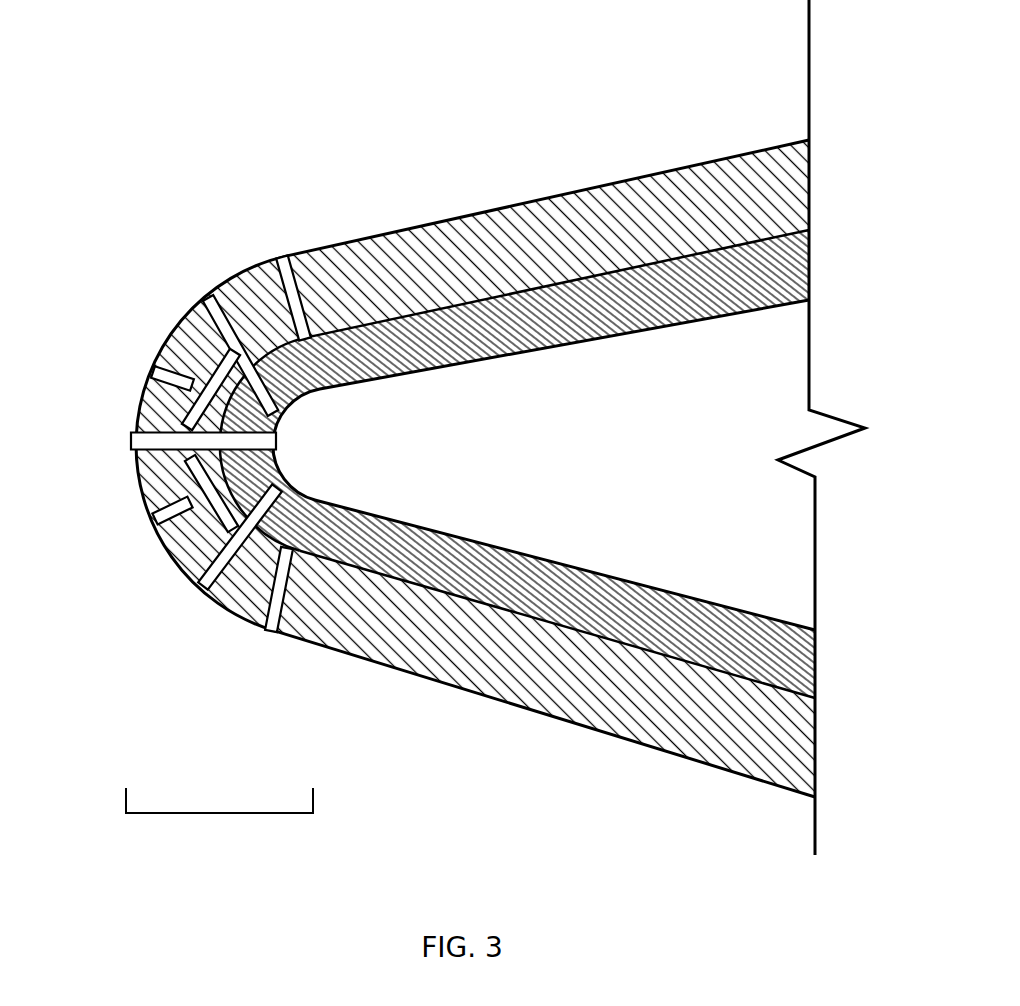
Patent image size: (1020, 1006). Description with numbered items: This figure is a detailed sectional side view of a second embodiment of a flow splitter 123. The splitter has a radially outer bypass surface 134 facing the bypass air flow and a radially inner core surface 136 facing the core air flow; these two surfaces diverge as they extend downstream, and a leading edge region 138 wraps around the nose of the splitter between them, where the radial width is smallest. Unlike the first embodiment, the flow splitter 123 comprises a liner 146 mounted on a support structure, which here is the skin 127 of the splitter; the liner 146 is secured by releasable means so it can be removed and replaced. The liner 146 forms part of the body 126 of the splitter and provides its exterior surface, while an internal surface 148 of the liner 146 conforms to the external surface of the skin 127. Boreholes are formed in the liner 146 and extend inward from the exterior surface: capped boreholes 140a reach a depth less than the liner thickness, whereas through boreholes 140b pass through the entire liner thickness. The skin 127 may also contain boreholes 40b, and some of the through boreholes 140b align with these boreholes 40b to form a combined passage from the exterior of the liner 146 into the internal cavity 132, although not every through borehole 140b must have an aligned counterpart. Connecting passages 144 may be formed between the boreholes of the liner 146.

The flow splitter 123 is at (192, 90).
The body 126 is at (612, 213).
The skin 127 is at (800, 268).
The internal cavity 132 is at (804, 549).
The bypass surface 134 is at (698, 166).
The core surface 136 is at (716, 770).
The leading edge region 138 is at (215, 815).
The capped boreholes 140a is at (170, 355).
The through boreholes 140b is at (296, 275).
The connecting passages 144 is at (150, 393).
The liner 146 is at (430, 258).
The internal surface 148 is at (575, 625).
The boreholes 40b is at (283, 418).